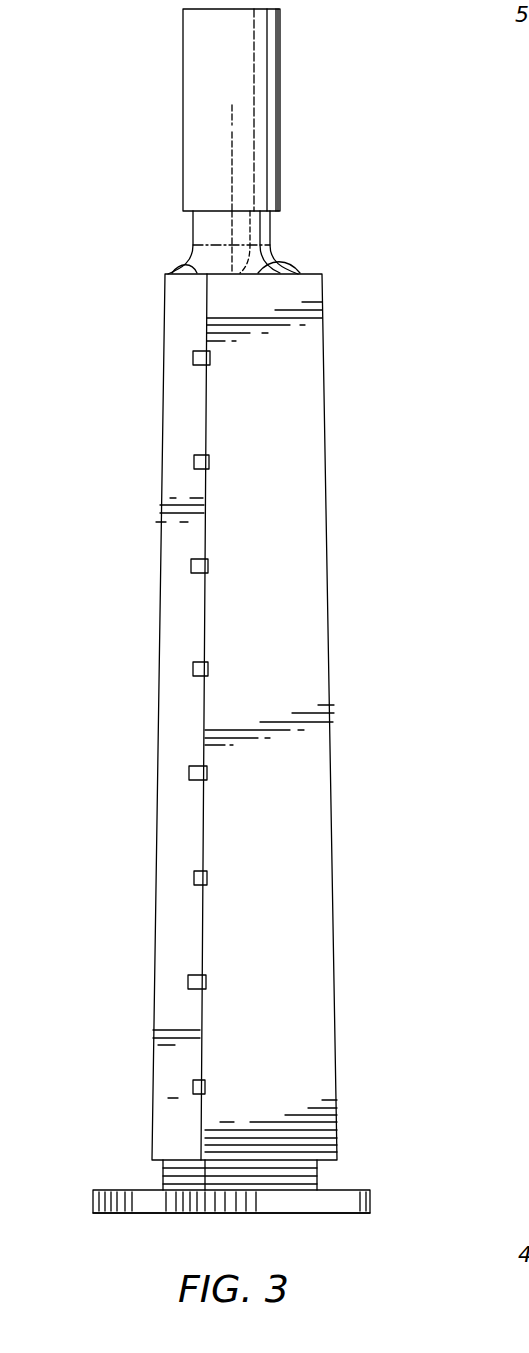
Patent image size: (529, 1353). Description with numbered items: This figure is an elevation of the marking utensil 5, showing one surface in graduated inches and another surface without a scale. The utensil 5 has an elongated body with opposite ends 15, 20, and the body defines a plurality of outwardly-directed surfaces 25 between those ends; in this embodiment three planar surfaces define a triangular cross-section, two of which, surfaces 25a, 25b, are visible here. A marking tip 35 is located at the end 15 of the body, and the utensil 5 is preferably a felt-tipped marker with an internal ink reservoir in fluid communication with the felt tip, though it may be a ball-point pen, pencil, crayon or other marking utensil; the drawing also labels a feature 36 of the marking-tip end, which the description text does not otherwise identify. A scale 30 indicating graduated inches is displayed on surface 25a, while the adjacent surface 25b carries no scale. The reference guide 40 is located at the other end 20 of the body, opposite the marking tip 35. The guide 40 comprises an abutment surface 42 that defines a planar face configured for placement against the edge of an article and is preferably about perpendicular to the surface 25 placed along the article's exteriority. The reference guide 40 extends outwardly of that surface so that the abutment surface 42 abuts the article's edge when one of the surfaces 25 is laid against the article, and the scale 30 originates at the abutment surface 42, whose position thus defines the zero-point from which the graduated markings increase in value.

The marking utensil 5 is at (94, 40).
The marking tip 35 is at (176, 117).
The root block edge lines 36 is at (263, 87).
The end 15 is at (177, 228).
The outwardly-directed surfaces 25 is at (347, 515).
The planar surface 25a is at (181, 744).
The planar surface 25b is at (293, 683).
The scale 30 is at (182, 881).
The end 20 is at (380, 1200).
The abutment surface 42 is at (113, 1190).
The reference guide 40 is at (112, 1217).